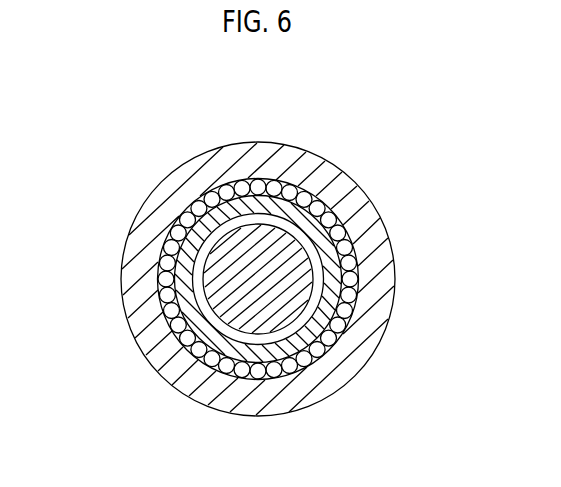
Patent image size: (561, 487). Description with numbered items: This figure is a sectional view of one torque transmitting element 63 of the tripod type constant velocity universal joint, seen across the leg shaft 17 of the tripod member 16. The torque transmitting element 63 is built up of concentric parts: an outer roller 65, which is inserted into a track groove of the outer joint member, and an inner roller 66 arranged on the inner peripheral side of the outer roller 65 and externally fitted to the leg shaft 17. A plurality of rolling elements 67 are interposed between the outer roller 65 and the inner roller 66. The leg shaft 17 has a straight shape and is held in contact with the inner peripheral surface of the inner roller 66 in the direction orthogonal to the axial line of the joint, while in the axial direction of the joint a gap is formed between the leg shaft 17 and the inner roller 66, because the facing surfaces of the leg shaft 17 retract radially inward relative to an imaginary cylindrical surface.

The torque transmitting element 63 is at (261, 282).
The outer roller 65 is at (222, 145).
The rolling elements 67 is at (173, 239).
The inner roller 66 is at (185, 316).
The tripod member 16 is at (256, 347).
The leg shaft 17 is at (292, 228).